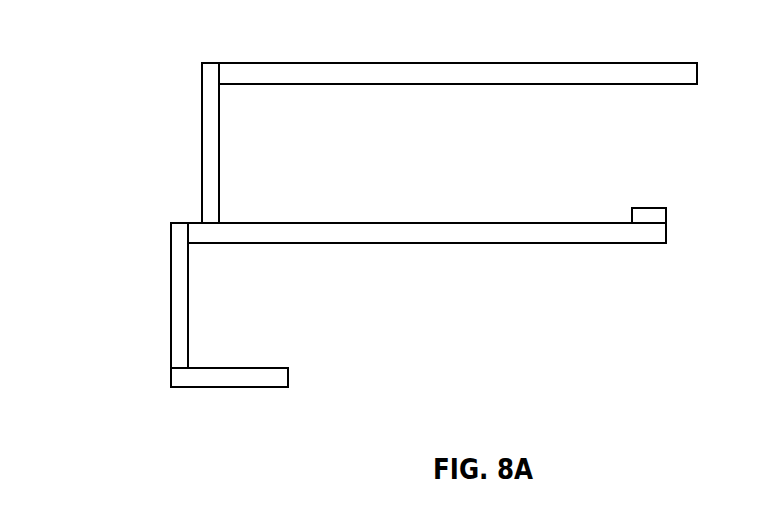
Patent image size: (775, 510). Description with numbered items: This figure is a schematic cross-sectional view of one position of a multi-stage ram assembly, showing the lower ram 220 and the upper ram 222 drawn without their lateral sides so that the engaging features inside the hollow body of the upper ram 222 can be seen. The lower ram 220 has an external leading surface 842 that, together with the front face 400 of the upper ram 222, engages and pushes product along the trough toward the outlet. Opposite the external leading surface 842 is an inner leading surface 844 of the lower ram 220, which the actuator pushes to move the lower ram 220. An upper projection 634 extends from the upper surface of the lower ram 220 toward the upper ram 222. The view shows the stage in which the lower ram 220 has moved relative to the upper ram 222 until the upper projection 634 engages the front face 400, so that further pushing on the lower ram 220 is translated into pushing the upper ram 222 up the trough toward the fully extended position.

The upper ram 222 is at (449, 114).
The front face 400 is at (219, 143).
The upper projection 634 is at (649, 207).
The external leading surface 842 is at (170, 310).
The inner leading surface 844 is at (188, 332).
The lower ram 220 is at (386, 315).